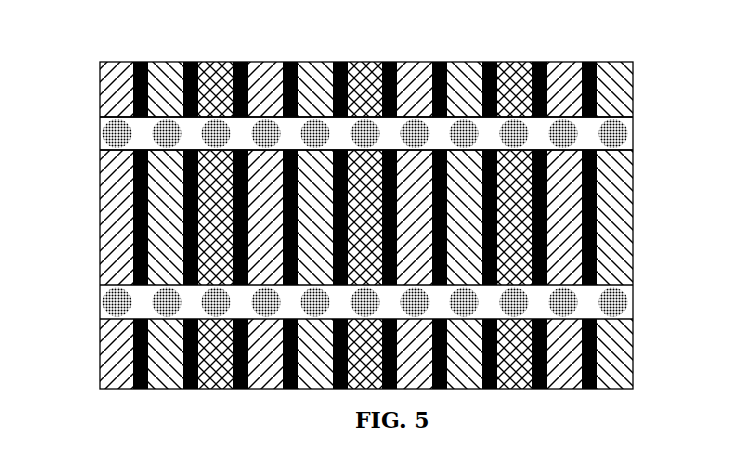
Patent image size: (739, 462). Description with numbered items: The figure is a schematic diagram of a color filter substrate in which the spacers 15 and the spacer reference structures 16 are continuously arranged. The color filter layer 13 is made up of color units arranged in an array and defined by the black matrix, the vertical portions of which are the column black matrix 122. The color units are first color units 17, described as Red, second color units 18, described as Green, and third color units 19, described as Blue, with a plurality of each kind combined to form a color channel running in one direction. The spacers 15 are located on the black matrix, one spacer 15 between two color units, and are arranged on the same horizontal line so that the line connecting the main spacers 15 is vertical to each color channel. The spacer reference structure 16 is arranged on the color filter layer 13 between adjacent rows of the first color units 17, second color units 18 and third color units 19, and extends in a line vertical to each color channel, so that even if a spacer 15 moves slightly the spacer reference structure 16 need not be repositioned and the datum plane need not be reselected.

The column black matrix 122 is at (258, 201).
The color filter layer 13 is at (323, 198).
The first color unit 17 is at (380, 198).
The second color unit 18 is at (418, 202).
The third color unit 19 is at (478, 198).
The spacer 15 is at (92, 122).
The spacer reference structure 16 is at (386, 204).